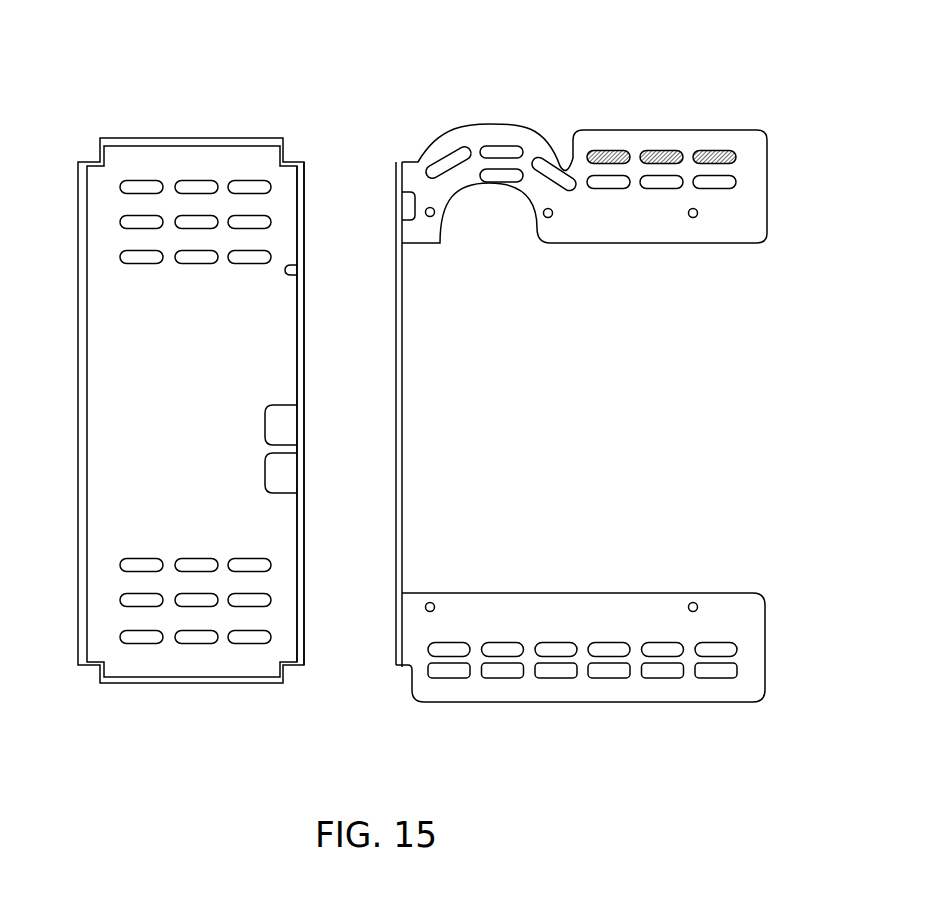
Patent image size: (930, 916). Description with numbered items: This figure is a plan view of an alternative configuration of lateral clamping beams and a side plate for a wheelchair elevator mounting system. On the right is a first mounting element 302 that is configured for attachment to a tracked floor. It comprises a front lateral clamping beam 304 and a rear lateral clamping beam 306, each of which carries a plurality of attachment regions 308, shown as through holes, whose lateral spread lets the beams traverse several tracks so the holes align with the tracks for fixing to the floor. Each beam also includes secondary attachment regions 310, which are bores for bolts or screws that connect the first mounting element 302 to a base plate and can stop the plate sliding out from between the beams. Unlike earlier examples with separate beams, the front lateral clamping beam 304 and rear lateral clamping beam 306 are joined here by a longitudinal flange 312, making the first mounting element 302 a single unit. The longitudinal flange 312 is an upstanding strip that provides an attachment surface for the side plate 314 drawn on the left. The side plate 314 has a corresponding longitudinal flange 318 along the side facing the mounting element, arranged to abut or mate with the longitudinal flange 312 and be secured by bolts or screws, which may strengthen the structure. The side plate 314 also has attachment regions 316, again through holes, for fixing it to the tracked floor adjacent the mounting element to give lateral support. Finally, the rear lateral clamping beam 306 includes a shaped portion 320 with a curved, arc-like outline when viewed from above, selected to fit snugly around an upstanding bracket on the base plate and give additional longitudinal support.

The first mounting element 302 is at (581, 401).
The front lateral clamping beam 304 is at (557, 599).
The rear lateral clamping beam 306 is at (633, 147).
The attachment regions 308 is at (656, 188).
The secondary attachment regions 310 is at (432, 216).
The longitudinal flange 312 is at (397, 425).
The side plate 314 is at (200, 165).
The attachment regions 316 is at (198, 643).
The corresponding longitudinal flange 318 is at (297, 232).
The shaped portion 320 is at (490, 137).